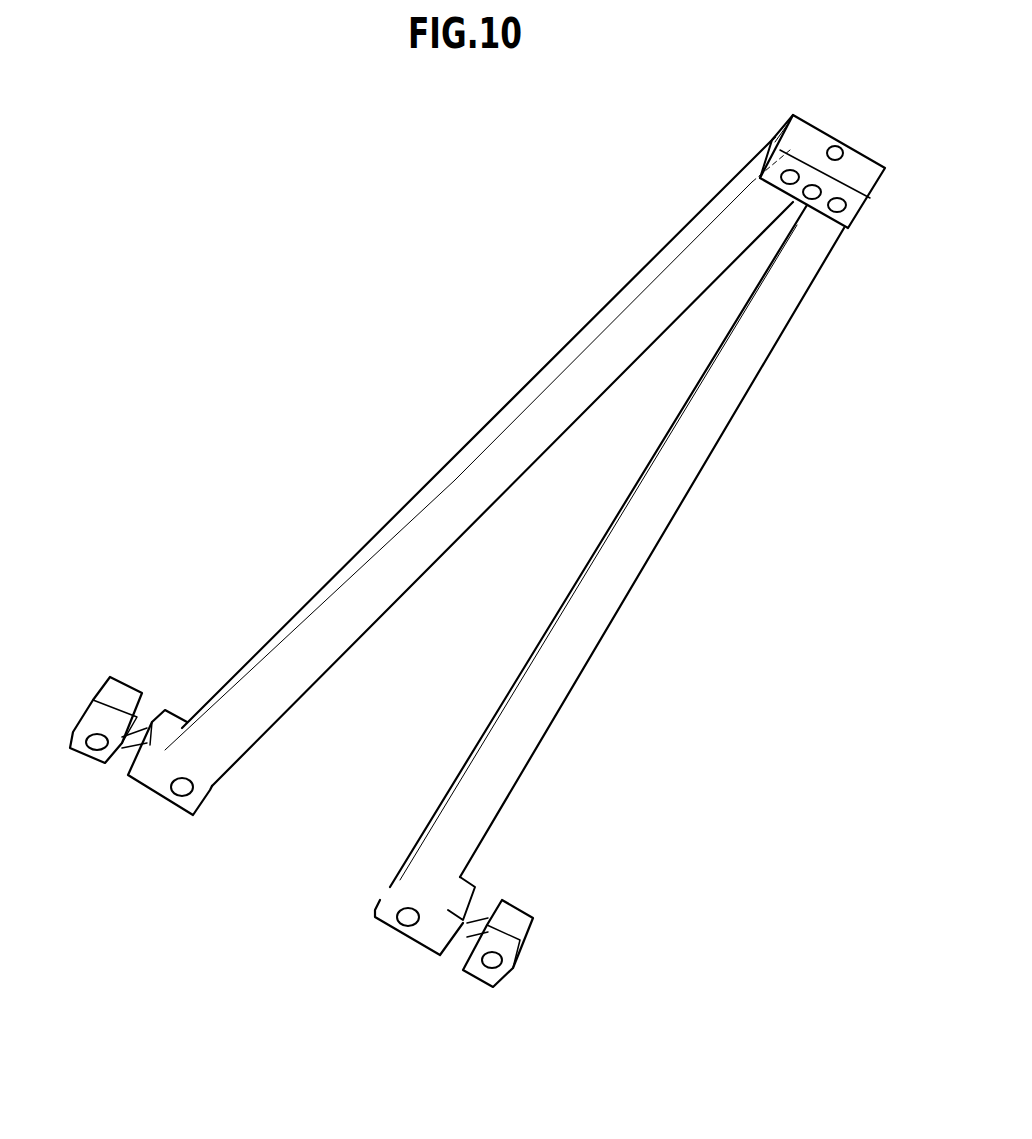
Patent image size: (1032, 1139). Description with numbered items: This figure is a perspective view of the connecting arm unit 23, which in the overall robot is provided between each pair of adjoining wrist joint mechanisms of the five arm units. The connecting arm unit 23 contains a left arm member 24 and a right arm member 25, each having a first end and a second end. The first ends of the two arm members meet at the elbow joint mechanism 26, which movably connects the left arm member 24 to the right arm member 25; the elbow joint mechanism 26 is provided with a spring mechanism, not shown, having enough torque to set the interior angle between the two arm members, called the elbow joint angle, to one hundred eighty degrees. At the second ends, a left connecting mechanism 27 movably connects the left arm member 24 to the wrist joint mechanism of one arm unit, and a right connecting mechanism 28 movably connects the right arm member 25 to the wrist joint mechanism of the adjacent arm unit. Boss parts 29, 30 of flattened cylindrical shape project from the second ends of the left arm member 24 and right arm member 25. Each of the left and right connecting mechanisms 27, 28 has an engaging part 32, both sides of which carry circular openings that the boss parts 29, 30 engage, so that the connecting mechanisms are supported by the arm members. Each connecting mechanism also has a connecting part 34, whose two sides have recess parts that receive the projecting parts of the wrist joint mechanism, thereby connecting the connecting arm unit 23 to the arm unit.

The connecting arm unit 23 is at (752, 413).
The left arm member 24 is at (568, 344).
The right arm member 25 is at (664, 530).
The elbow joint mechanism 26 is at (822, 130).
The left connecting mechanism 27 is at (149, 794).
The right connecting mechanism 28 is at (428, 956).
The boss part 29 is at (183, 797).
The boss part 30 is at (403, 922).
The engaging part 32 is at (377, 907).
The connecting part 34 is at (94, 765).